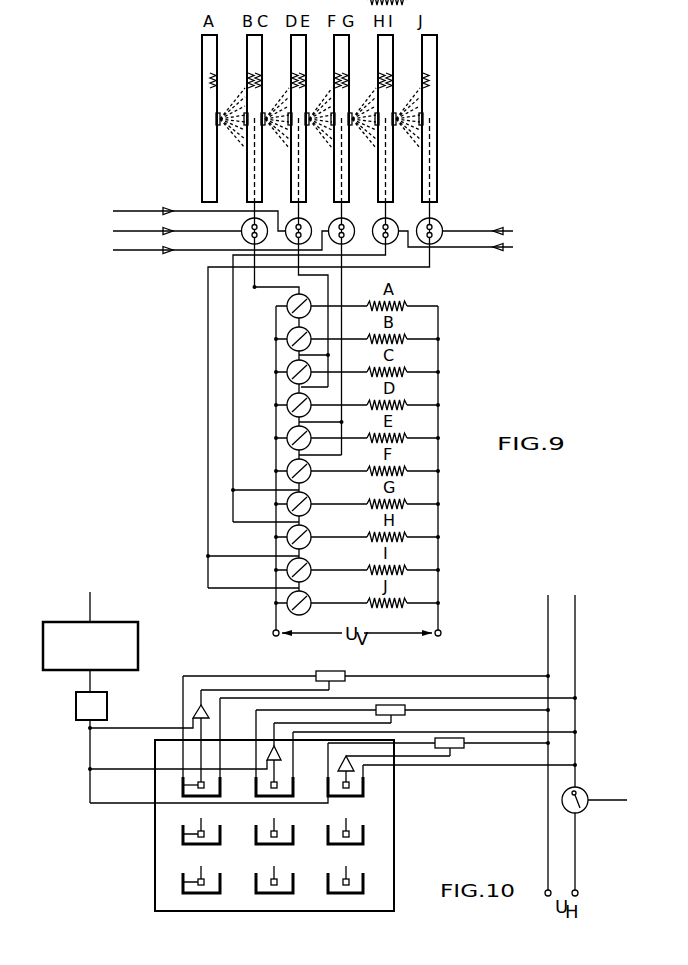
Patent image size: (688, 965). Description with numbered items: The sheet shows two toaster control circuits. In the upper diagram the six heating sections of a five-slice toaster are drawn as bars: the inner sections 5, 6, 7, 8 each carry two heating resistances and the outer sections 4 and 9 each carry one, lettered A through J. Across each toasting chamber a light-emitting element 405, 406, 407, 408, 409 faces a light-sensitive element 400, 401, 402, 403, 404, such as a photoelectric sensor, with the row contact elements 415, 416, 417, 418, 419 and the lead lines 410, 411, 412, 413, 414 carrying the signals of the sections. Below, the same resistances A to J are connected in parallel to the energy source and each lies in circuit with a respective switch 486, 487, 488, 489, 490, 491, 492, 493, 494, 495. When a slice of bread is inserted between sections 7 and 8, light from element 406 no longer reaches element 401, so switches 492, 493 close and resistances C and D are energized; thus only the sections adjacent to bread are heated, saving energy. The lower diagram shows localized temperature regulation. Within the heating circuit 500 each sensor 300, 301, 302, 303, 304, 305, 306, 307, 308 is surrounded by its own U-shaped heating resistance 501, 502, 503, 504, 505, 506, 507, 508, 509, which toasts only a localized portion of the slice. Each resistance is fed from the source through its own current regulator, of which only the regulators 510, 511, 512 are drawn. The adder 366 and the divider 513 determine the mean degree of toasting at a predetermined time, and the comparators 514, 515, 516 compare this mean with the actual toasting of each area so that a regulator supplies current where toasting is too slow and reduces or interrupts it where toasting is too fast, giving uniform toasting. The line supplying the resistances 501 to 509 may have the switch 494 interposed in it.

In FIG. 9, the outer heating section 4 is at (437, 186).
In FIG. 9, the inner heating section 5 is at (393, 186).
In FIG. 9, the inner heating section 6 is at (349, 186).
In FIG. 9, the inner heating section 7 is at (306, 186).
In FIG. 9, the inner heating section 8 is at (262, 186).
In FIG. 9, the outer heating section 9 is at (217, 186).
In FIG. 9, the light-sensitive element 400 is at (251, 134).
In FIG. 9, the light-sensitive element 401 is at (295, 134).
In FIG. 9, the light-sensitive element 402 is at (338, 134).
In FIG. 9, the light-sensitive element 403 is at (382, 134).
In FIG. 9, the light-sensitive element 404 is at (426, 134).
In FIG. 9, the light-emitting element 405 is at (221, 100).
In FIG. 9, the light-emitting element 406 is at (266, 100).
In FIG. 9, the light-emitting element 407 is at (310, 100).
In FIG. 9, the light-emitting element 408 is at (353, 100).
In FIG. 9, the light-emitting element 409 is at (397, 100).
In FIG. 9, the input line 410 is at (141, 203).
In FIG. 9, the input line 411 is at (183, 231).
In FIG. 9, the input line 412 is at (140, 251).
In FIG. 9, the input line 413 is at (492, 228).
In FIG. 9, the input line 414 is at (482, 250).
In FIG. 9, the contact element 415 is at (245, 226).
In FIG. 9, the contact element 416 is at (307, 221).
In FIG. 9, the contact element 417 is at (350, 221).
In FIG. 9, the contact element 418 is at (394, 221).
In FIG. 9, the contact element 419 is at (438, 221).
In FIG. 9, the switch 486 is at (307, 612).
In FIG. 9, the switch 487 is at (307, 579).
In FIG. 9, the switch 488 is at (307, 546).
In FIG. 9, the switch 489 is at (307, 513).
In FIG. 9, the switch 490 is at (307, 480).
In FIG. 9, the switch 491 is at (291, 448).
In FIG. 9, the switch 492 is at (291, 415).
In FIG. 9, the switch 493 is at (291, 382).
In FIG. 9, the switch 494 is at (291, 349).
In FIG. 10, the switch 494 is at (585, 793).
In FIG. 9, the switch 495 is at (291, 316).
In FIG. 10, the adder 366 is at (138, 641).
In FIG. 10, the divider 513 is at (107, 700).
In FIG. 10, the comparator 514 is at (194, 711).
In FIG. 10, the comparator 515 is at (266, 752).
In FIG. 10, the comparator 516 is at (338, 766).
In FIG. 10, the current regulator 510 is at (331, 668).
In FIG. 10, the current regulator 511 is at (391, 705).
In FIG. 10, the current regulator 512 is at (449, 738).
In FIG. 10, the heating circuit 500 is at (394, 796).
In FIG. 10, the sensor 300 is at (183, 785).
In FIG. 10, the sensor 301 is at (274, 796).
In FIG. 10, the sensor 302 is at (346, 796).
In FIG. 10, the sensor 303 is at (183, 834).
In FIG. 10, the sensor 304 is at (274, 844).
In FIG. 10, the sensor 305 is at (346, 844).
In FIG. 10, the sensor 306 is at (183, 882).
In FIG. 10, the sensor 307 is at (274, 893).
In FIG. 10, the sensor 308 is at (346, 893).
In FIG. 10, the heating resistance 501 is at (220, 785).
In FIG. 10, the heating resistance 502 is at (293, 785).
In FIG. 10, the heating resistance 503 is at (363, 785).
In FIG. 10, the heating resistance 504 is at (220, 834).
In FIG. 10, the heating resistance 505 is at (293, 834).
In FIG. 10, the heating resistance 506 is at (363, 834).
In FIG. 10, the heating resistance 507 is at (220, 882).
In FIG. 10, the heating resistance 508 is at (293, 882).
In FIG. 10, the heating resistance 509 is at (363, 882).